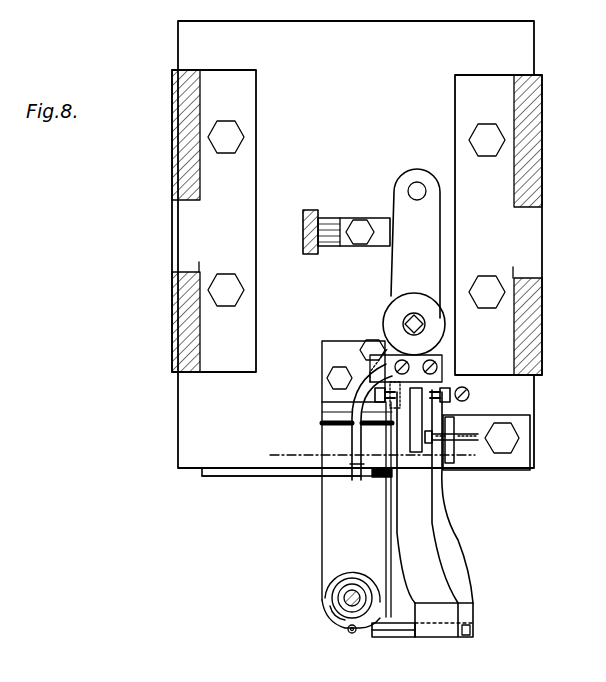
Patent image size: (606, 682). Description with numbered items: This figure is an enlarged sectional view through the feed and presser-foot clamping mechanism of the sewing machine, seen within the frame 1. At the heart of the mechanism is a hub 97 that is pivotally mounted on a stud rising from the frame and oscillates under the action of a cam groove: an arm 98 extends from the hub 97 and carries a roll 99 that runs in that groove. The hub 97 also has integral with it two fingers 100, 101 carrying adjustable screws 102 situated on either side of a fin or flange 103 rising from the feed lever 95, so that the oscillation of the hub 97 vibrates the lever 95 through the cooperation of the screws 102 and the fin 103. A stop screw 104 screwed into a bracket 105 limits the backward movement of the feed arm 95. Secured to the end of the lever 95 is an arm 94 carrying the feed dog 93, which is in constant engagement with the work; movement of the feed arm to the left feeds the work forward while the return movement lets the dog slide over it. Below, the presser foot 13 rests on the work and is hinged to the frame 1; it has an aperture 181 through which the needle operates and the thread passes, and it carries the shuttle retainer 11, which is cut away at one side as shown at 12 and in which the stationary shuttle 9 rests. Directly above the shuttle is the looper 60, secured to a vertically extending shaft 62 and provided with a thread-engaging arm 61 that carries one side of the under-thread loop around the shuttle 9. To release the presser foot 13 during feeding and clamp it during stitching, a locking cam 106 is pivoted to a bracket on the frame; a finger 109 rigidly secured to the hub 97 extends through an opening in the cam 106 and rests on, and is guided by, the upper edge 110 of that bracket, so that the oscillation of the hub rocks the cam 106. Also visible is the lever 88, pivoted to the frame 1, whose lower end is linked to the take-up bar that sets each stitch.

The frame 1 is at (515, 61).
The lever 88 is at (312, 222).
The arm 98 is at (398, 264).
The roll 99 is at (408, 188).
The hub 97 is at (389, 318).
The adjustable screws 102 is at (372, 378).
The finger 101 is at (469, 400).
The fin or flange 103 is at (420, 420).
The stop screw 104 is at (447, 462).
The bracket 105 is at (460, 455).
The finger 109 is at (322, 425).
The finger 100 is at (401, 404).
The cut-away portion of shuttle retainer 12 is at (366, 457).
The upper edge of bracket 110 is at (312, 470).
The locking cam 106 is at (380, 478).
The presser foot 13 is at (322, 536).
The thread-engaging arm 61 is at (322, 608).
The looper member 60 is at (336, 600).
The vertically-extending shaft 62 is at (345, 592).
The shuttle-carrier or shuttle-retainer 11 is at (360, 585).
The shuttle 9 is at (352, 590).
The aperture 181 is at (348, 634).
The lever (feed arm) 95 is at (445, 580).
The feed dog 93 is at (383, 637).
The arm 94 is at (408, 637).